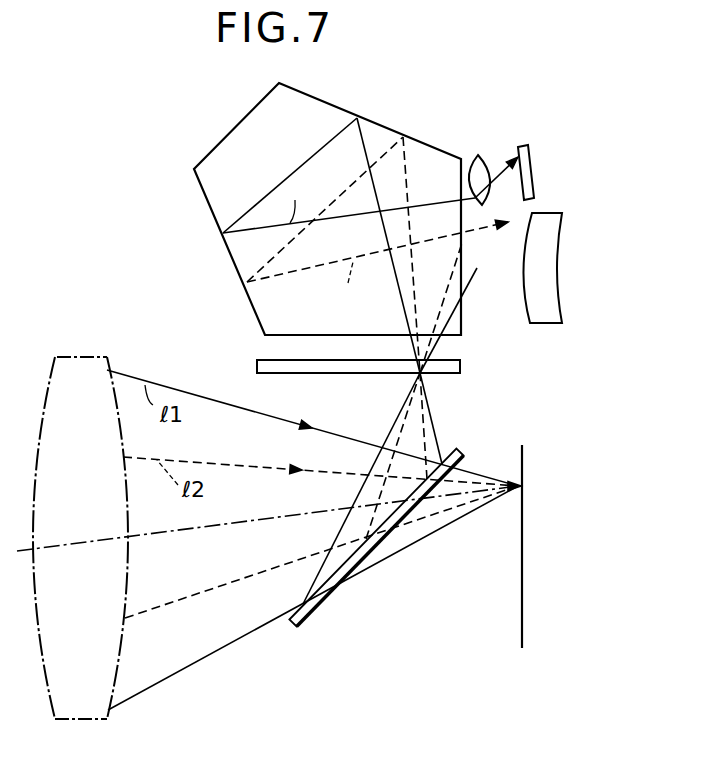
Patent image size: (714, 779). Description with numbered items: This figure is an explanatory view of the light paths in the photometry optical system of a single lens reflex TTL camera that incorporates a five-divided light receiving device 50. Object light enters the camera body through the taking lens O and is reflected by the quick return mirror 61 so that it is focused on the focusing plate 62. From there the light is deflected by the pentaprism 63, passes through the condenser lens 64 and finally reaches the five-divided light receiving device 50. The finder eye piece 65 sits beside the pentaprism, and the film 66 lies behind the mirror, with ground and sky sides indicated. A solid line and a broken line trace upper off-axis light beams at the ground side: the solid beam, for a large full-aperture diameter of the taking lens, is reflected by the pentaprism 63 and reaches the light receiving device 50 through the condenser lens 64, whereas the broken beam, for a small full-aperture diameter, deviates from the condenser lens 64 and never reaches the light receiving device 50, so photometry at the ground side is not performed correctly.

The taking lens O is at (72, 355).
The quick return mirror 61 is at (362, 557).
The focusing plate 62 is at (463, 363).
The pentaprism 63 is at (379, 123).
The condenser lens 64 is at (479, 152).
The five-divided light receiving device 50 is at (530, 150).
The finder eye piece 65 is at (560, 272).
The film 66 is at (523, 550).